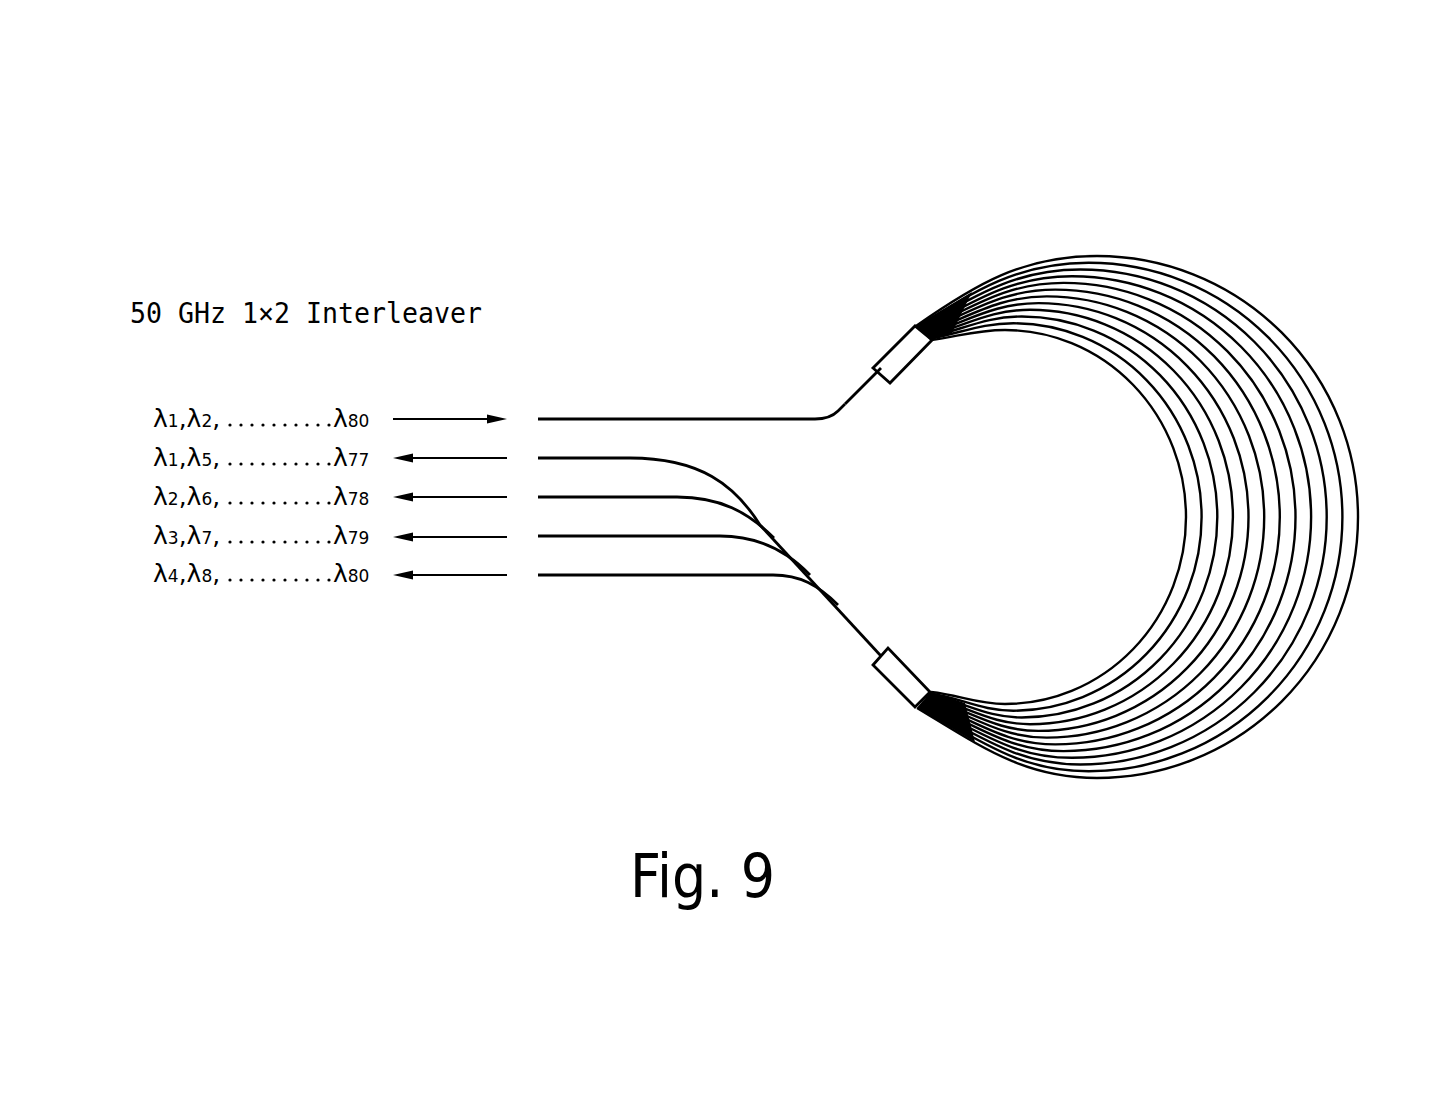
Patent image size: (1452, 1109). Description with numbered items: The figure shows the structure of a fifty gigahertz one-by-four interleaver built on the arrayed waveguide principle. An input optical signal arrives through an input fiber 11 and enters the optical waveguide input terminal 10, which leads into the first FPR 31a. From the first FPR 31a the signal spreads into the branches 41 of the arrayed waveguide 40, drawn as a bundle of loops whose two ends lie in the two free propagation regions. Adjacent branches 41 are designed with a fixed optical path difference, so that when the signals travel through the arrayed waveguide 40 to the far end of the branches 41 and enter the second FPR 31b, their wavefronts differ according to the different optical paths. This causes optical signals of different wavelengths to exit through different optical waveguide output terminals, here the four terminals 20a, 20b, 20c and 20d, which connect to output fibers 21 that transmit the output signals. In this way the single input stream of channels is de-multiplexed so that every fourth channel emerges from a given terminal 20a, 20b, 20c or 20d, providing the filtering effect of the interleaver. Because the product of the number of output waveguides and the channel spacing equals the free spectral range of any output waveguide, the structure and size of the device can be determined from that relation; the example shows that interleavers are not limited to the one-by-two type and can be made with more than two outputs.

The optical waveguide input terminal 10 is at (868, 384).
The input fiber 11 is at (669, 418).
The optical waveguide output terminal 20a is at (688, 472).
The optical waveguide output terminal 20b is at (733, 506).
The optical waveguide output terminal 20c is at (773, 542).
The optical waveguide output terminal 20d is at (782, 578).
The output fibers 21 is at (628, 577).
The first FPR 31a is at (900, 355).
The second FPR 31b is at (898, 676).
The arrayed waveguide 40 is at (1190, 252).
The branches 41 is at (1323, 383).